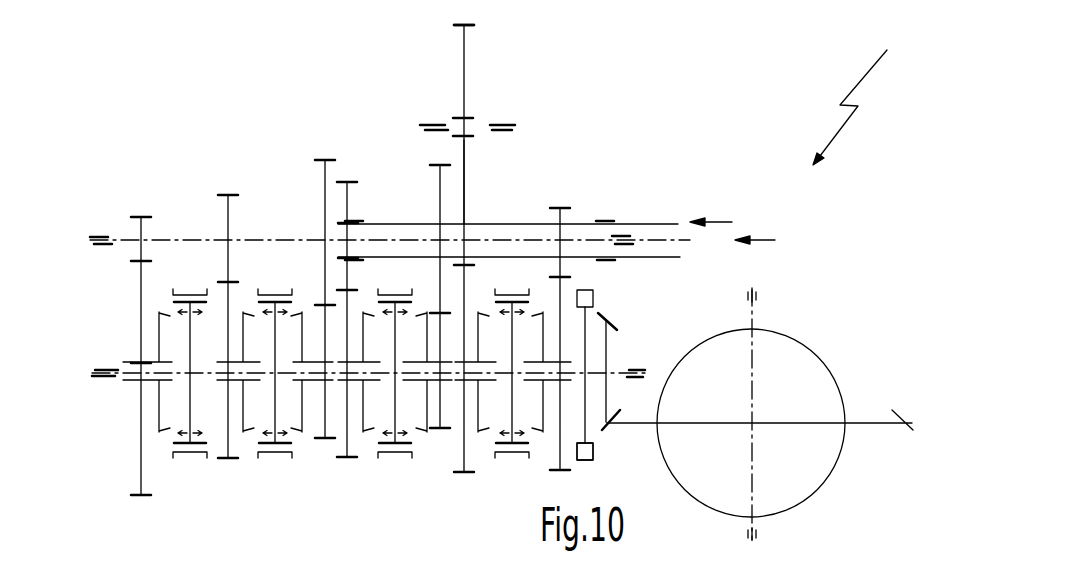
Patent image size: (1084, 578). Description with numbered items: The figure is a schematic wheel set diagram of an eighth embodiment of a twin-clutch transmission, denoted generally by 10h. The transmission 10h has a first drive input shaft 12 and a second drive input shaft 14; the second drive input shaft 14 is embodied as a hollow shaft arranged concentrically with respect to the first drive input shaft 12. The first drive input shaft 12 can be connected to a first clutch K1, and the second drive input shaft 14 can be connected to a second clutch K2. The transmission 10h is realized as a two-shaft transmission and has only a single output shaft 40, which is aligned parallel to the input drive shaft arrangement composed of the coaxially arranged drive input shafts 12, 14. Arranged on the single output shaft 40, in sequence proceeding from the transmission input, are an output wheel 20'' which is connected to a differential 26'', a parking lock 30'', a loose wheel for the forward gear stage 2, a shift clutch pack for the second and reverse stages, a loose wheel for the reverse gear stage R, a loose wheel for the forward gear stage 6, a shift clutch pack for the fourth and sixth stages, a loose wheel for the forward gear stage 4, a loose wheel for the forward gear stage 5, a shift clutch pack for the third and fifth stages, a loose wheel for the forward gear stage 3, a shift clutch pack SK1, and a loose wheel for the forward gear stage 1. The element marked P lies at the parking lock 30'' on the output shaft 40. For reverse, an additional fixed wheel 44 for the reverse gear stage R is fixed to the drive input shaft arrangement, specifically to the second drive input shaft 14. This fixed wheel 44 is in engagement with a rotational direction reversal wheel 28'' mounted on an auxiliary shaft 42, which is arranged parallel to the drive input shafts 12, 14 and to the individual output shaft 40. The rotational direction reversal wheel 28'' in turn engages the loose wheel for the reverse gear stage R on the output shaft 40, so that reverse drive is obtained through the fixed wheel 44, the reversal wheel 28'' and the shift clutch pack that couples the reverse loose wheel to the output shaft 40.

The twin-clutch transmission 10h is at (859, 95).
The first drive input shaft 12 is at (690, 240).
The second drive input shaft 14 is at (648, 222).
The first clutch K1 is at (726, 214).
The second clutch K2 is at (770, 236).
The forward gear stage 1 is at (147, 370).
The forward gear stage 2 is at (547, 351).
The forward gear stage 3 is at (238, 339).
The forward gear stage 4 is at (358, 333).
The forward gear stage 5 is at (313, 312).
The forward gear stage 6 is at (427, 311).
The reverse gear stage R is at (475, 261).
The parking lock P is at (585, 389).
The shift clutch pack SK1 is at (190, 296).
The output shaft 40 is at (126, 367).
The auxiliary shaft 42 is at (450, 118).
The fixed wheel 44 is at (466, 190).
The rotational direction reversal wheel 28'' is at (509, 35).
The output wheel 20'' is at (755, 360).
The differential 26'' is at (783, 387).
The parking lock 30'' is at (625, 483).